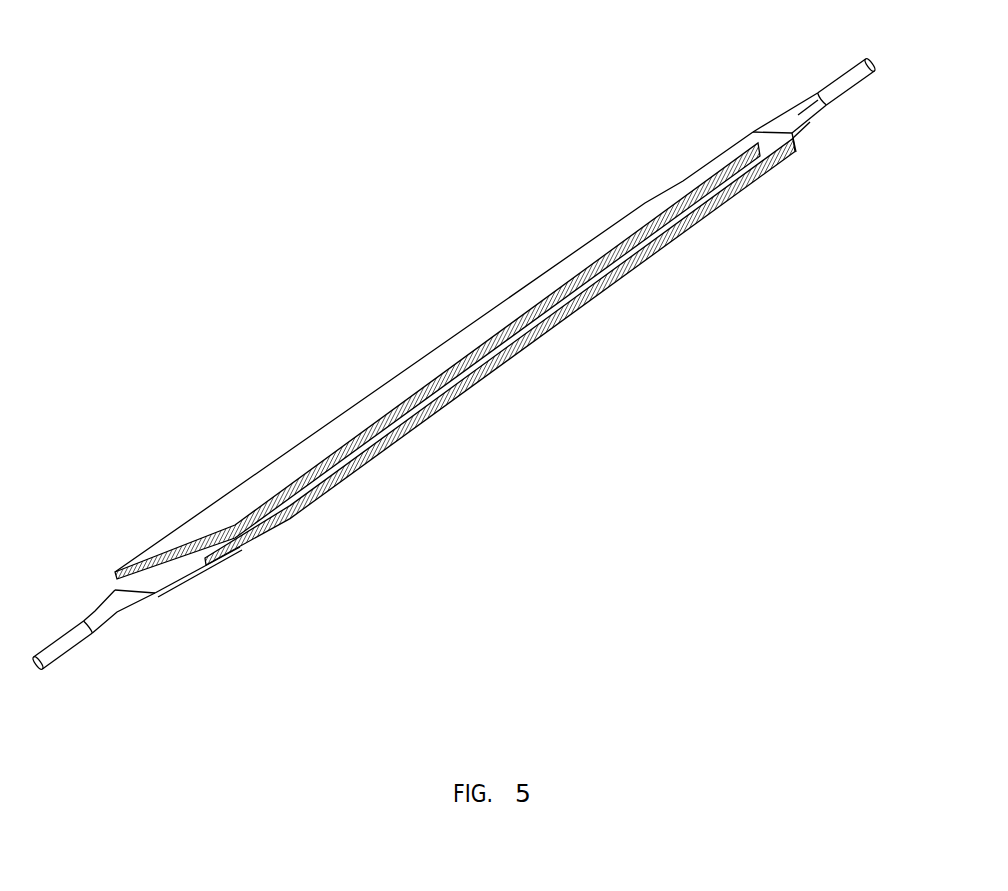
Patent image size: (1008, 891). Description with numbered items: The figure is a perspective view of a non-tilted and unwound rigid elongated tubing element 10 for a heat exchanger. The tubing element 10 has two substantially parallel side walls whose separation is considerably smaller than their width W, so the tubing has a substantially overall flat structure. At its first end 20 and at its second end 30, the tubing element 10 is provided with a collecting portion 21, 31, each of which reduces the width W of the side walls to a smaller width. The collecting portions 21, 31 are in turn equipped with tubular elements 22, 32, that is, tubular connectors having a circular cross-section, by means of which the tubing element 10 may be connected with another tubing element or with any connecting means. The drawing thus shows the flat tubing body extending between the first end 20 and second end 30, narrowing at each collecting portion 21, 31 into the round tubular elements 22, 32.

The tubing element 10 is at (388, 362).
The first end 20 is at (737, 140).
The collecting portion 21 is at (798, 117).
The tubular element 22 is at (849, 77).
The second end 30 is at (180, 577).
The collecting portion 31 is at (123, 602).
The tubular element 32 is at (57, 653).
The width w is at (768, 134).